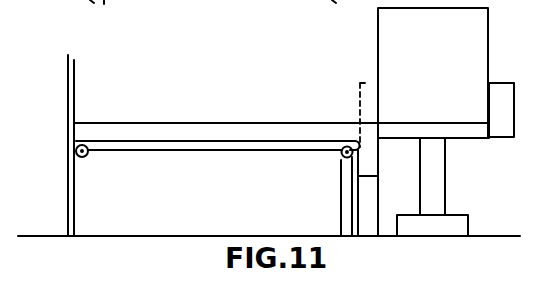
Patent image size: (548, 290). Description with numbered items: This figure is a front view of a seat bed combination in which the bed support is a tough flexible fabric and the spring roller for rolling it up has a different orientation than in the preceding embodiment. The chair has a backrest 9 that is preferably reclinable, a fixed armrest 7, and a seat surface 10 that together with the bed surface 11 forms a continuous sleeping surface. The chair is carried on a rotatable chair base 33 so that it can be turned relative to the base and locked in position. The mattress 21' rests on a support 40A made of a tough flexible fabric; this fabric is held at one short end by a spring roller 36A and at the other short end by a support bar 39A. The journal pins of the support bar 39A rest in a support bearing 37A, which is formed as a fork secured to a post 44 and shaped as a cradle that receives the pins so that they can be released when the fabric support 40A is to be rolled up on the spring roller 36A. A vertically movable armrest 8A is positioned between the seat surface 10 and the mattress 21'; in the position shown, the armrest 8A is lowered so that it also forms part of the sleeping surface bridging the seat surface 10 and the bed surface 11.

The fixed armrest 7 is at (505, 90).
The vertically movable armrest 8A is at (362, 135).
The backrest 9 is at (438, 57).
The seat surface 10 is at (418, 121).
The bed surface 11 is at (122, 125).
The mattress 21' is at (215, 115).
The rotatable chair base 33 is at (430, 196).
The spring roller 36A is at (84, 158).
The support bearing 37A is at (338, 157).
The support bar 39A is at (338, 155).
The support 40A is at (196, 145).
The post 44 is at (352, 203).